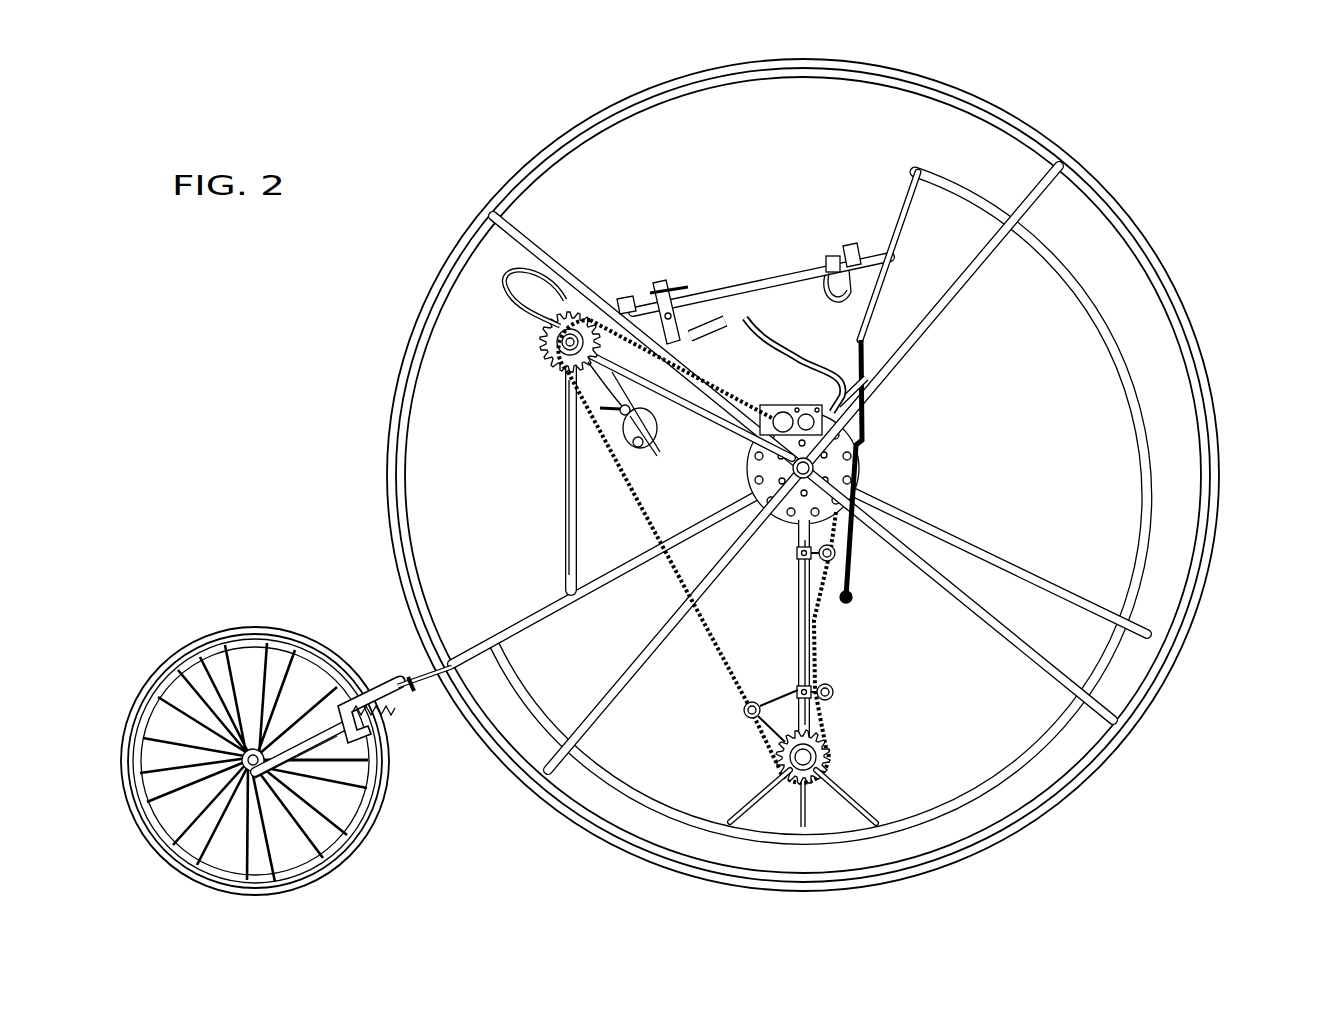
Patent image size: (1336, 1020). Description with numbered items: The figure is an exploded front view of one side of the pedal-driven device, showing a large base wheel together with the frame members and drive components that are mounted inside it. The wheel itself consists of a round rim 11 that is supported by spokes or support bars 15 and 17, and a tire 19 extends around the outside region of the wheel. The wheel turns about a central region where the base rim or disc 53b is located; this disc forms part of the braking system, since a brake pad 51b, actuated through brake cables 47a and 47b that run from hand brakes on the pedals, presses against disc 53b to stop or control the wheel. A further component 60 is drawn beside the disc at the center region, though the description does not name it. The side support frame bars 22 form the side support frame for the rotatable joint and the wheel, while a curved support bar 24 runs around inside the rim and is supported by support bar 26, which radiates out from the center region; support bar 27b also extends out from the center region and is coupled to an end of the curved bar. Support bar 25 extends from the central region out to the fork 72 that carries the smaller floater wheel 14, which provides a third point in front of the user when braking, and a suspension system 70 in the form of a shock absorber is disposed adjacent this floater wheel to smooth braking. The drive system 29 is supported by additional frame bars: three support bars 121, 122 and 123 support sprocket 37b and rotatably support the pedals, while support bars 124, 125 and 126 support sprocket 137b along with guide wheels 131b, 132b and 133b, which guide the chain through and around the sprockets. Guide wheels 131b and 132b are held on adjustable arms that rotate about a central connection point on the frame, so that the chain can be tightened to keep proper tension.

The rim 11 is at (1190, 342).
The floater wheel 14 is at (212, 632).
The spoke 15 is at (522, 235).
The spoke 17 is at (1061, 160).
The tire 19 is at (598, 110).
The side support frame bars 22 is at (876, 200).
The curved support bar 24 is at (1087, 287).
The support bar 25 is at (515, 617).
The support bar 26 is at (988, 545).
The support bar 27b is at (913, 160).
The drive system 29 is at (640, 268).
The sprocket 37b is at (540, 335).
The brake cable 47a is at (793, 300).
The brake cable 47b is at (770, 330).
The brake pad 51b is at (776, 410).
The base rim 53b is at (860, 465).
The hub mount 60 is at (858, 400).
The suspension system 70 is at (383, 688).
The fork 72 is at (345, 700).
The support bar 121 is at (566, 445).
The support bar 122 is at (716, 422).
The support bar 123 is at (706, 318).
The support bar 124 is at (805, 655).
The support bar 125 is at (732, 813).
The support bar 126 is at (873, 817).
The guide wheel 131b is at (836, 562).
The guide wheel 132b is at (832, 690).
The guide wheel 133b is at (745, 713).
The sprocket 137b is at (818, 750).